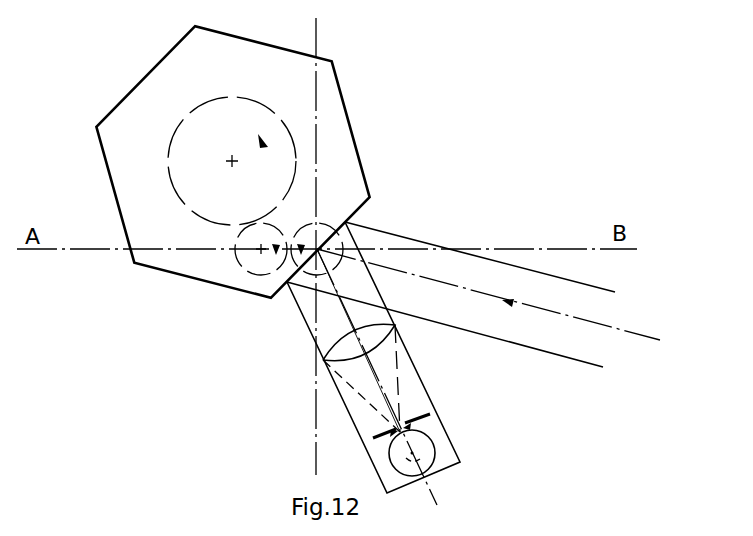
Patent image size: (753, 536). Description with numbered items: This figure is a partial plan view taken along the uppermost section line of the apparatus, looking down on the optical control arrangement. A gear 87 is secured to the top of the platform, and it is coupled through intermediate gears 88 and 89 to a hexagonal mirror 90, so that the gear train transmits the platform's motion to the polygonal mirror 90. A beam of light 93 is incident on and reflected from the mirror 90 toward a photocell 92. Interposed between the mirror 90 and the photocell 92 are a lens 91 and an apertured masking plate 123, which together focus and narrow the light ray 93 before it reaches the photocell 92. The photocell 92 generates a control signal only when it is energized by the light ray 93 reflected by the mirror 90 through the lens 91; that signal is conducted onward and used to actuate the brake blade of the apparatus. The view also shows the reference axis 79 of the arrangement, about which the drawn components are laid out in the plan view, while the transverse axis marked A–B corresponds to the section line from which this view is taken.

The vertical axis 79 is at (306, 246).
The gear 87 is at (320, 226).
The gear 88 is at (244, 259).
The gear 89 is at (185, 207).
The hexagonal mirror 90 is at (109, 174).
The lens 91 is at (319, 348).
The photocell 92 is at (428, 446).
The light ray 93 is at (473, 294).
The apertured masking plate 123 is at (428, 409).